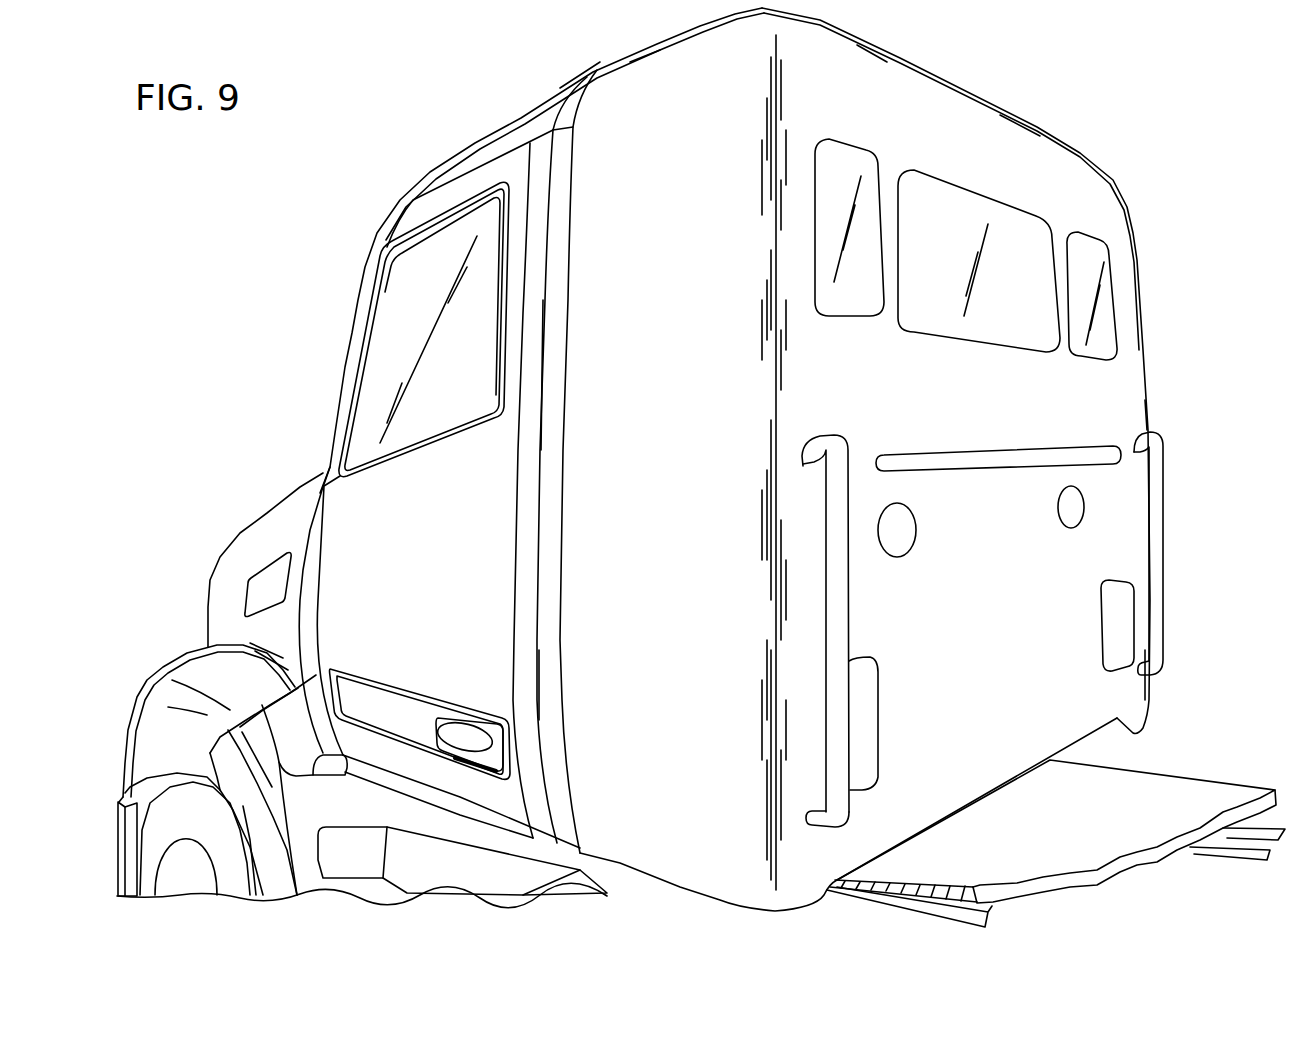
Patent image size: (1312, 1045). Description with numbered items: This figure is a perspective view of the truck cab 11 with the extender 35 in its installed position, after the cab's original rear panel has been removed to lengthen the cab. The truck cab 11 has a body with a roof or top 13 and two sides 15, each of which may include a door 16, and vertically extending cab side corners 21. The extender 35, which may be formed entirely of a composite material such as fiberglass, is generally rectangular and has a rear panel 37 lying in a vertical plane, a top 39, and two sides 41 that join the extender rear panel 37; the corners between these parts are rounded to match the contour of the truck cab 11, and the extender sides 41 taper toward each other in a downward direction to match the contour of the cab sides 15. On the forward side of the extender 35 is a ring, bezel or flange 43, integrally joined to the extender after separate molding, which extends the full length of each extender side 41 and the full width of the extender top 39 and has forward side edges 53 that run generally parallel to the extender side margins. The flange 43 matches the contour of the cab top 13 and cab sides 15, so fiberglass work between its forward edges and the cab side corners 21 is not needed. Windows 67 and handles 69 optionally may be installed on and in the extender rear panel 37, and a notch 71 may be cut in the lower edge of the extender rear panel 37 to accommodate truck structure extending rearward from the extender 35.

The truck cab 11 is at (326, 344).
The top 13 is at (515, 110).
The side 15 is at (480, 582).
The door 16 is at (347, 540).
The cab side corner 21 is at (533, 625).
The extender 35 is at (1168, 322).
The rear panel 37 is at (1018, 612).
The top 39 is at (900, 52).
The side 41 is at (663, 747).
The flange 43 is at (548, 673).
The forward side edge 53 is at (542, 420).
The window 67 is at (975, 190).
The handle 69 is at (980, 452).
The notch 71 is at (945, 832).